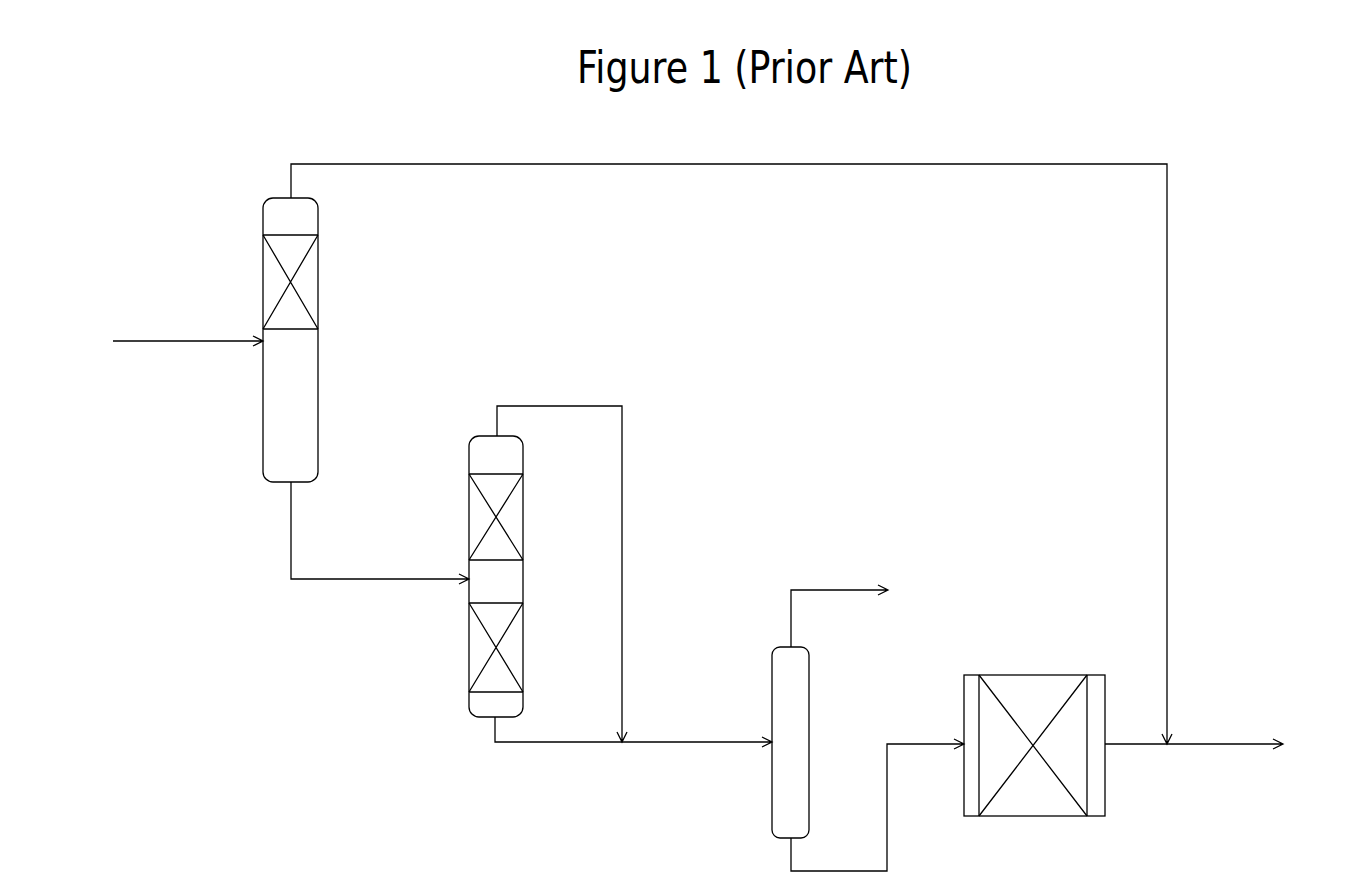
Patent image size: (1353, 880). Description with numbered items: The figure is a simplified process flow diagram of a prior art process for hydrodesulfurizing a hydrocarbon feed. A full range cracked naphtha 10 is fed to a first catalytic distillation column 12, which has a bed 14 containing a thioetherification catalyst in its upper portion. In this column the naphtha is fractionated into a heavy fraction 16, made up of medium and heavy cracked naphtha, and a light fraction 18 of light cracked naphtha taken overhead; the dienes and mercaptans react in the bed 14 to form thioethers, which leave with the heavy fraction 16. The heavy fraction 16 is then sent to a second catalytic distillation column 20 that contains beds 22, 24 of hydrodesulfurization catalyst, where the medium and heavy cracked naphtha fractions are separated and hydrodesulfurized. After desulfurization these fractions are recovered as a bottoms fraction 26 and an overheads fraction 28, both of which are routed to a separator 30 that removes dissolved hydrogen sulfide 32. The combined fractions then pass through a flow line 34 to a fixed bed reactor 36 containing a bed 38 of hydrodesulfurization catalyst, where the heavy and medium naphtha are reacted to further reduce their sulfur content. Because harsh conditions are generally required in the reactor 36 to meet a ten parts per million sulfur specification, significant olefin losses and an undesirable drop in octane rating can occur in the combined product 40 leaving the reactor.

The full range cracked naphtha 10 is at (170, 341).
The first catalytic distillation column 12 is at (265, 198).
The bed 14 is at (305, 283).
The heavy fraction 16 is at (360, 578).
The light fraction 18 is at (333, 163).
The second catalytic distillation column 20 is at (470, 436).
The bed 22 is at (507, 522).
The bed 24 is at (512, 650).
The bottoms fraction 26 is at (574, 741).
The overheads fraction 28 is at (545, 405).
The separator 30 is at (772, 645).
The hydrogen sulfide 32 is at (812, 588).
The flow line 34 is at (889, 742).
The fixed bed reactor 36 is at (966, 673).
The bed 38 is at (1033, 698).
The combined product 40 is at (1248, 743).